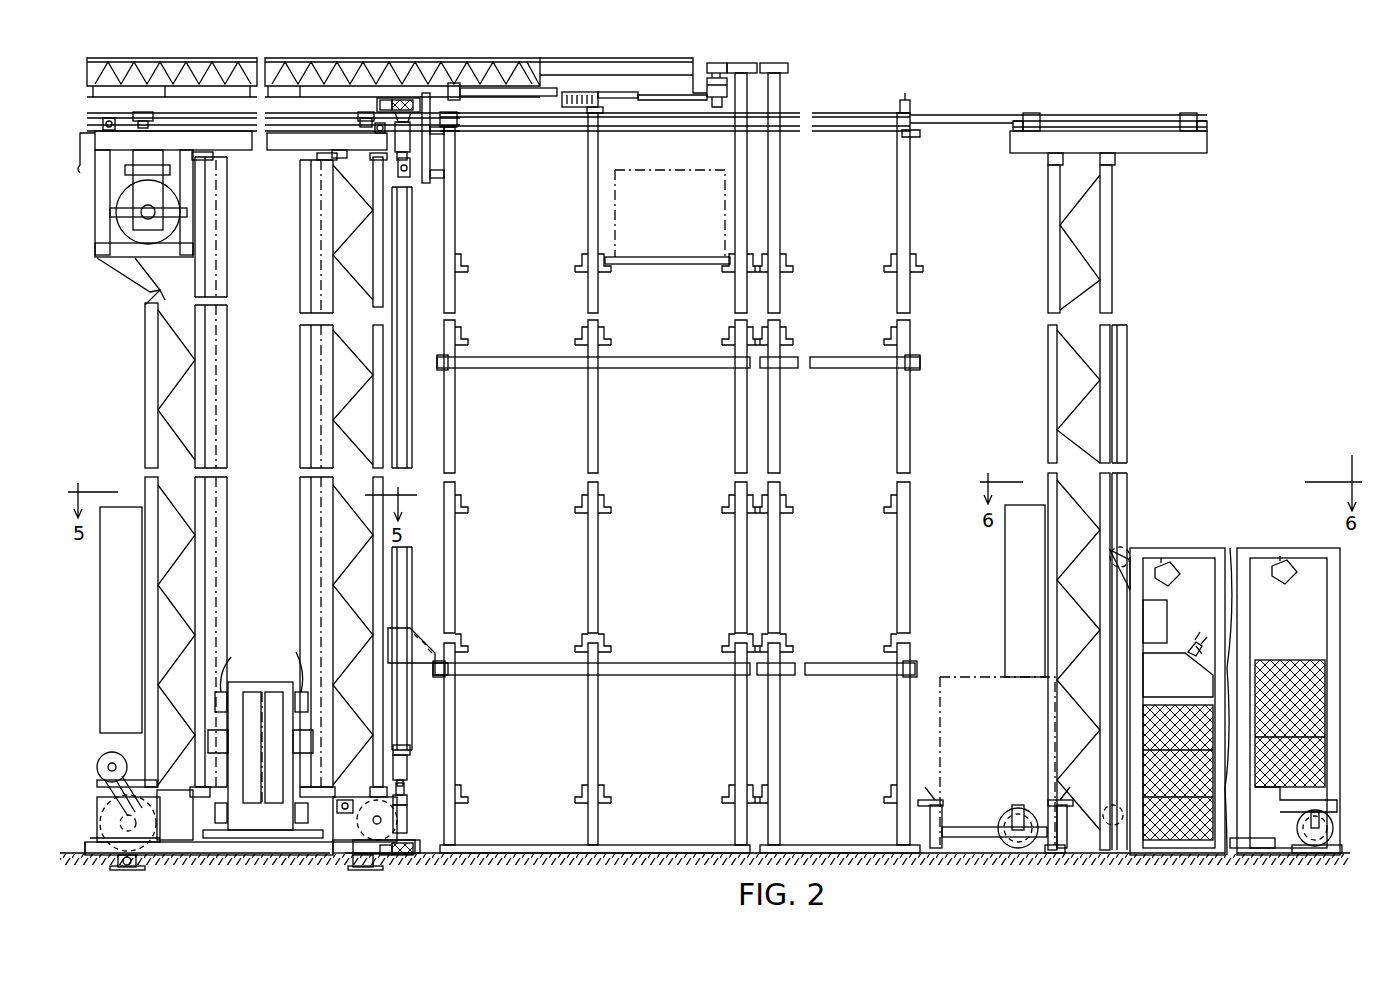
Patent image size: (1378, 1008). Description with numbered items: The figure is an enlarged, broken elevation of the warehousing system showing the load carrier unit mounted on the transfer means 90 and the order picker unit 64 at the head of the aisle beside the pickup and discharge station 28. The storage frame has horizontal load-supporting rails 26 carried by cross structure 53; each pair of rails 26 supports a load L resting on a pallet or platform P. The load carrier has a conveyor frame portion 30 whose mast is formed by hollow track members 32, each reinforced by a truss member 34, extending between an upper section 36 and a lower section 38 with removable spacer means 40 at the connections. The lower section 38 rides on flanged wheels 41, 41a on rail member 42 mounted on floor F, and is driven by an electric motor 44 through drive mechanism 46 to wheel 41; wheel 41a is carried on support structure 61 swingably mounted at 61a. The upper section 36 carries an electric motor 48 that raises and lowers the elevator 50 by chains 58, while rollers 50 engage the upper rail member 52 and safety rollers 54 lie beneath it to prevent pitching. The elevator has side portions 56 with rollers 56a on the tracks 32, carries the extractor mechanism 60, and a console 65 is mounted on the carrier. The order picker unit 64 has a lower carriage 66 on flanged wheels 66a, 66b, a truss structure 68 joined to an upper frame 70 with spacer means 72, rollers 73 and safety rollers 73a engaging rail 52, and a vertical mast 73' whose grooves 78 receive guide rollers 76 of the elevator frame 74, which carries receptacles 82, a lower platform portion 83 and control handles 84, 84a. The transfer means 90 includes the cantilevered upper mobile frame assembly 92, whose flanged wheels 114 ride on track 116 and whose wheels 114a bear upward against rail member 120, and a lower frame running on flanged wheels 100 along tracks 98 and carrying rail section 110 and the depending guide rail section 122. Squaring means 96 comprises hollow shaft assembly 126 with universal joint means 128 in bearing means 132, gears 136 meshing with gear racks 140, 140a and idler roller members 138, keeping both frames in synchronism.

The load-supporting rails 26 is at (600, 332).
The pickup and discharge station 28 is at (926, 841).
The conveyor frame portion 30 is at (173, 855).
The track members 32 is at (300, 425).
The truss member 34 is at (145, 398).
The upper section 36 is at (275, 135).
The lower section 38 is at (340, 855).
The removable spacer means 40 is at (211, 160).
The flanged wheel 41 is at (97, 816).
The flanged wheel 41a is at (399, 820).
The rail member 42 is at (557, 848).
The electric motor 44 is at (97, 773).
The drive mechanism 46 is at (164, 790).
The electric motor 48 is at (140, 260).
The elevator / rollers 50 is at (157, 115).
The rail member 52 is at (577, 130).
The cross structure 53 is at (912, 104).
The safety rollers 54 is at (114, 118).
The side portions 56 is at (270, 690).
The rollers 56a is at (268, 655).
The chains 58 is at (227, 370).
The extractor mechanism 60 is at (263, 838).
The support structure 61 is at (473, 791).
The swing mounting 61a is at (405, 793).
The order picker unit 64 is at (1148, 492).
The console 65 is at (413, 637).
The lower carriage 66 is at (1332, 805).
The flanged wheel 66a is at (1020, 848).
The flanged wheel 66b is at (1313, 850).
The truss structure 68 is at (1112, 250).
The upper frame 70 is at (1207, 145).
The removable spacer means 72 is at (1048, 165).
The rollers 73 is at (1110, 106).
The vertical mast 73' is at (1148, 587).
The safety rollers 73a is at (1240, 103).
The elevator frame 74 is at (1270, 548).
The guide rollers 76 is at (1125, 552).
The grooves 78 is at (1127, 340).
The receptacles 82 is at (1323, 682).
The lower platform portion 83 is at (1260, 848).
The control handle 84 is at (1190, 647).
The control handle 84a is at (1203, 649).
The transfer means 90 is at (598, 63).
The upper mobile frame assembly 92 is at (161, 60).
The squaring means 96 is at (424, 436).
The tracks 98 is at (136, 870).
The flanged wheels 100 is at (120, 863).
The rail section 110 is at (92, 840).
The flanged wheels 114 is at (457, 90).
The flanged wheels 114a is at (712, 98).
The track 116 is at (460, 117).
The rail member 120 is at (726, 64).
The guide rail section 122 is at (153, 163).
The hollow shaft assembly 126 is at (412, 555).
The universal joint means 128 is at (409, 170).
The bearing means 132 is at (409, 143).
The gears 136 is at (412, 98).
The idler roller member 138 is at (384, 100).
The gear rack 140 is at (400, 100).
The gear rack 140a is at (413, 855).
The floor F is at (683, 860).
The load L is at (688, 175).
The pallet or platform P is at (676, 263).